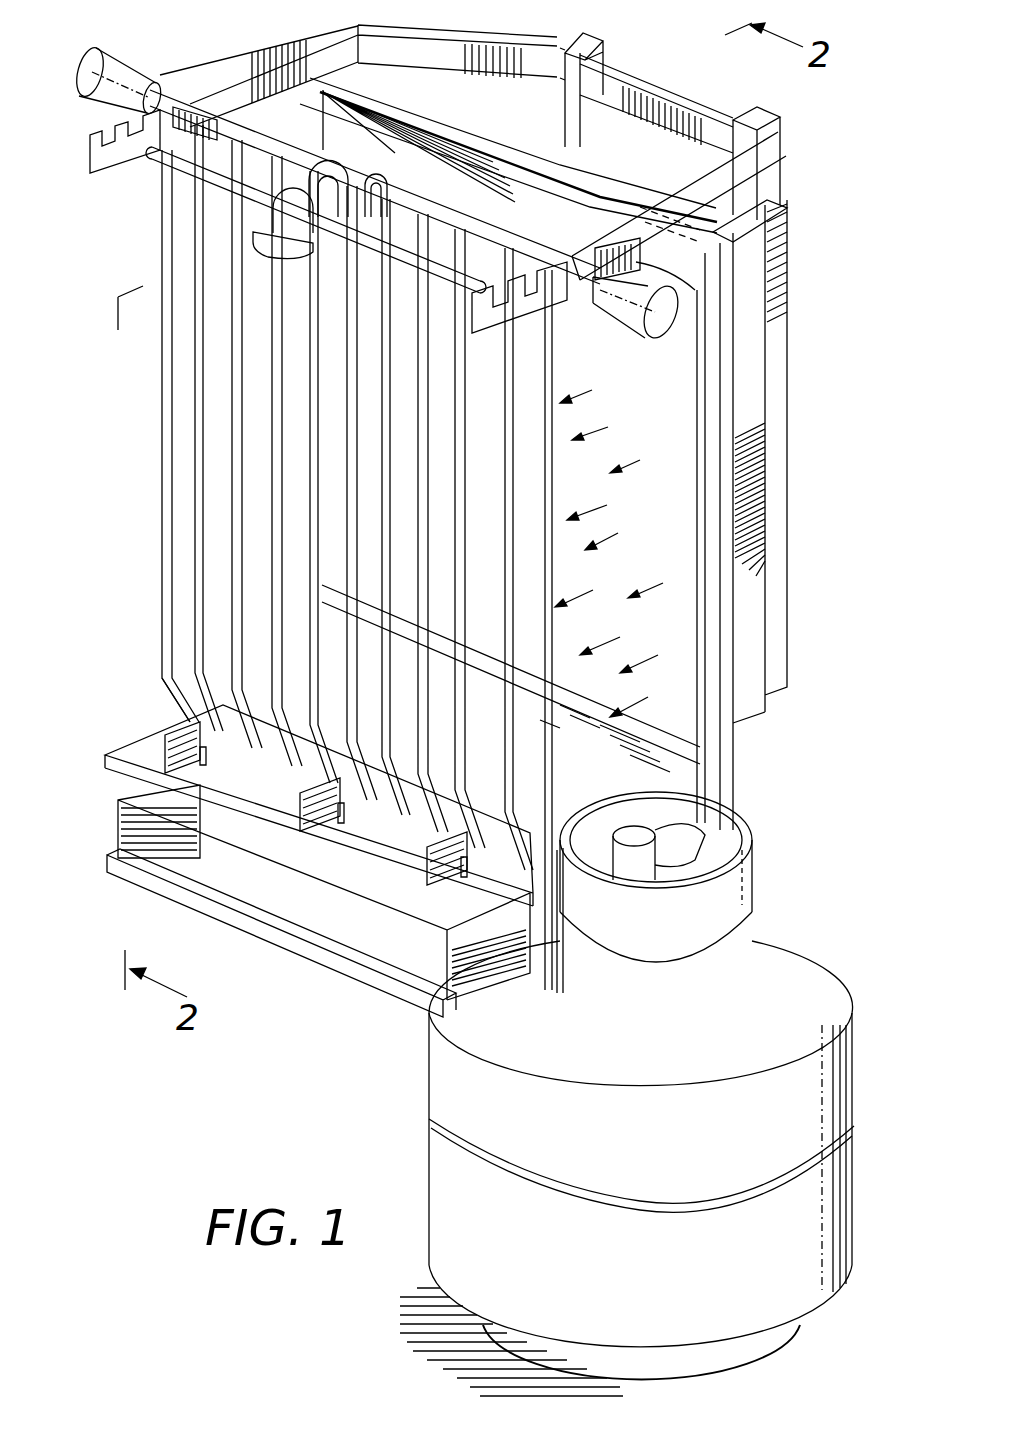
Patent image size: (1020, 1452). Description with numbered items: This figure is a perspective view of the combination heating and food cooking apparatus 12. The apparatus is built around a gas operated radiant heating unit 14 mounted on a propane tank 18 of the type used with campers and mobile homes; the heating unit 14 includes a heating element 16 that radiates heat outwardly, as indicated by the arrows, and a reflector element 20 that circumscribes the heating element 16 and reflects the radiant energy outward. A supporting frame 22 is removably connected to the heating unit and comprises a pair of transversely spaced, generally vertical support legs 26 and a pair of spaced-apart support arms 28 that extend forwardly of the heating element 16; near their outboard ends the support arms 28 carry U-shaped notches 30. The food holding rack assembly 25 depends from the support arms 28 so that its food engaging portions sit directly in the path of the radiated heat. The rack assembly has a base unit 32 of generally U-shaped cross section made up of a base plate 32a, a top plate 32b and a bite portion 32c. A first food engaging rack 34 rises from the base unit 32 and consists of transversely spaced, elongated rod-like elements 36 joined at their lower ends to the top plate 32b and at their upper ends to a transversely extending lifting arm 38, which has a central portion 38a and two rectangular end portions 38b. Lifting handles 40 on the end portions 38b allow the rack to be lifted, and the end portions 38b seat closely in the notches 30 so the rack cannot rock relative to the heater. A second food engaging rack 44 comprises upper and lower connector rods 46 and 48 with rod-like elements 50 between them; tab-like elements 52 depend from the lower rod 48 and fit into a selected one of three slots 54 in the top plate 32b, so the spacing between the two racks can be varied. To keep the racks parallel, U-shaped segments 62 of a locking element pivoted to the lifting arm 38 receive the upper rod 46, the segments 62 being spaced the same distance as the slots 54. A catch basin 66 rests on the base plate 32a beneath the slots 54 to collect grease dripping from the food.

The combination heating and food cooking apparatus 12 is at (822, 182).
The radiant heating unit 14 is at (780, 596).
The heating element 16 is at (690, 455).
The propane tank 18 is at (822, 960).
The reflector element 20 is at (410, 104).
The supporting frame 22 is at (688, 91).
The food holding rack assembly 25 is at (148, 493).
The support elements or legs 26 is at (605, 52).
The support arms 28 is at (262, 78).
The notches 30 is at (178, 100).
The base unit 32 is at (311, 876).
The base plate 32a is at (497, 998).
The top plate 32b is at (140, 766).
The bite portion 32c is at (562, 918).
The first food engaging rack 34 is at (555, 735).
The rod-like elements 36 is at (487, 272).
The lifting arm 38 is at (468, 152).
The central portion 38a is at (200, 108).
The end portions 38b is at (603, 242).
The lifting handles 40 is at (120, 68).
The second food engaging rack 44 is at (326, 570).
The connector rod 46 is at (193, 165).
The connector rod 48 is at (165, 718).
The rod-like elements 50 is at (270, 455).
The tab-like elements 52 is at (320, 817).
The slots 54 is at (167, 743).
The U-shaped segments 62 is at (372, 182).
The catch basin 66 is at (303, 917).